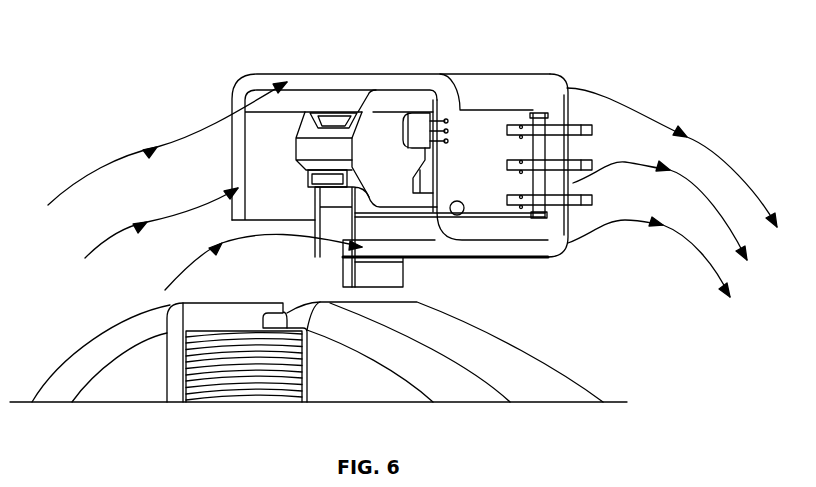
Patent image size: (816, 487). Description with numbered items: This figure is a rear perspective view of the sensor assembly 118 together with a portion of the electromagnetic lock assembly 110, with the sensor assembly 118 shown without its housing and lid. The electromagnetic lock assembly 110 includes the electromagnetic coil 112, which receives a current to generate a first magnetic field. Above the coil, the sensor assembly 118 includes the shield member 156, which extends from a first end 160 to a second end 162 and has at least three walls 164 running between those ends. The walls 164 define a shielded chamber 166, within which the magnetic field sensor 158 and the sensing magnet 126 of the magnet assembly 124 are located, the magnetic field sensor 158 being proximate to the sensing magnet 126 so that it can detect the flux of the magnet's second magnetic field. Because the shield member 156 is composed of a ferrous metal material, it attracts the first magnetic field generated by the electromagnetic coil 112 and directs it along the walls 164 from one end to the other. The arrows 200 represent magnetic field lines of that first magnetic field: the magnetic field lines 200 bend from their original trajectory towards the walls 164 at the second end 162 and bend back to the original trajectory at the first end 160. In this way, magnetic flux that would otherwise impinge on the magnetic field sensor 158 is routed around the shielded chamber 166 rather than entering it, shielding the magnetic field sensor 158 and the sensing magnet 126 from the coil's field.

The electromagnetic lock assembly 110 is at (600, 346).
The electromagnetic coil 112 is at (277, 383).
The sensor assembly 118 is at (658, 90).
The magnet assembly 124 is at (373, 107).
The sensing magnet 126 is at (330, 177).
The shield member 156 is at (498, 83).
The magnetic field sensor 158 is at (415, 128).
The first end 160 is at (563, 83).
The second end 162 is at (235, 88).
The walls 164 is at (296, 80).
The shielded chamber 166 is at (398, 100).
The magnetic field lines 200 is at (112, 155).